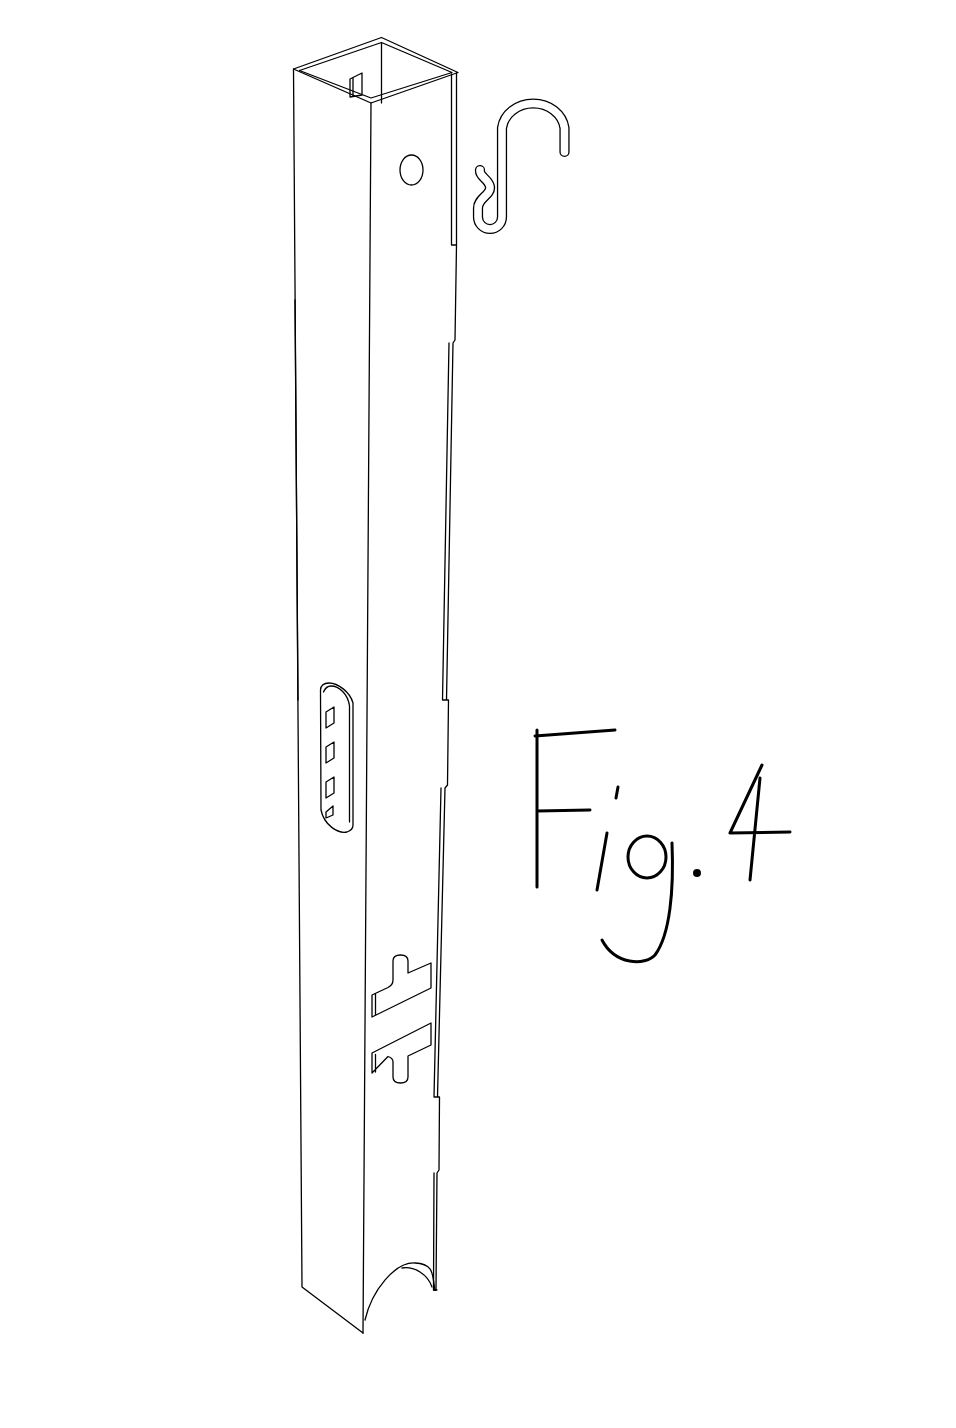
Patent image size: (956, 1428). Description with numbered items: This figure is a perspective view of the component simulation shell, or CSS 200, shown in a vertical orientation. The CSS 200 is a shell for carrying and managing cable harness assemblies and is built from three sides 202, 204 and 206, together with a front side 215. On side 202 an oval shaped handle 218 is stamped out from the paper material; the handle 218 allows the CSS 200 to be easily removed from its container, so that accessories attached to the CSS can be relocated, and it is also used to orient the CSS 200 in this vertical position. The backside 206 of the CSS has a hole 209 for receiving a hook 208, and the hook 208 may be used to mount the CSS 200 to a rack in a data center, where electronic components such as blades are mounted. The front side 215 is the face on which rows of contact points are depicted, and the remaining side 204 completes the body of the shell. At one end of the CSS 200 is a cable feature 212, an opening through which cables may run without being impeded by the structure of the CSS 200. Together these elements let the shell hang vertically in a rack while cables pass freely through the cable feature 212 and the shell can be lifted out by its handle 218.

The component simulation shell 200 is at (384, 681).
The side 202 is at (688, 559).
The side 204 is at (320, 893).
The backside 206 is at (417, 330).
The hook 208 is at (726, 107).
The hole 209 is at (415, 158).
The cable feature 212 is at (495, 1308).
The front side 215 is at (80, 474).
The handle 218 is at (340, 700).